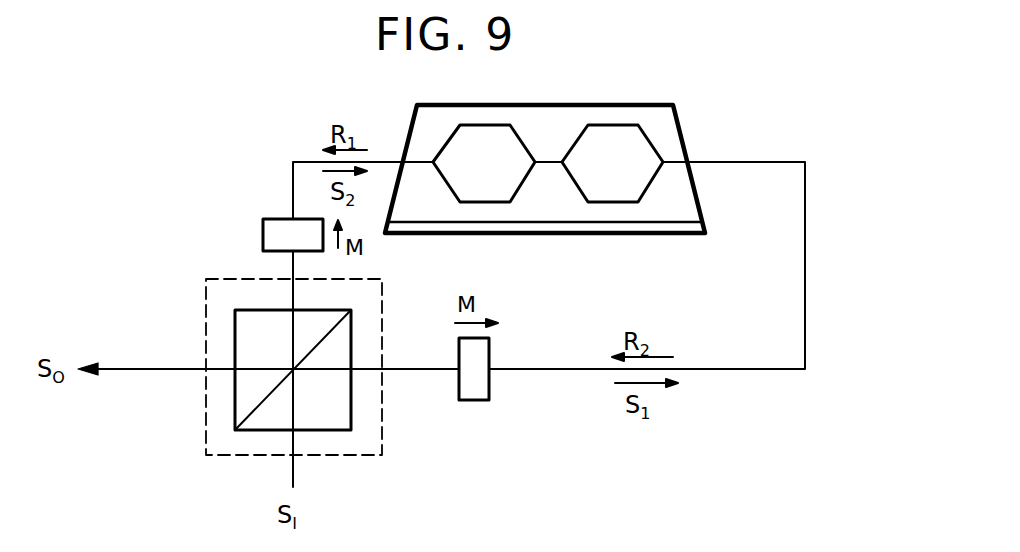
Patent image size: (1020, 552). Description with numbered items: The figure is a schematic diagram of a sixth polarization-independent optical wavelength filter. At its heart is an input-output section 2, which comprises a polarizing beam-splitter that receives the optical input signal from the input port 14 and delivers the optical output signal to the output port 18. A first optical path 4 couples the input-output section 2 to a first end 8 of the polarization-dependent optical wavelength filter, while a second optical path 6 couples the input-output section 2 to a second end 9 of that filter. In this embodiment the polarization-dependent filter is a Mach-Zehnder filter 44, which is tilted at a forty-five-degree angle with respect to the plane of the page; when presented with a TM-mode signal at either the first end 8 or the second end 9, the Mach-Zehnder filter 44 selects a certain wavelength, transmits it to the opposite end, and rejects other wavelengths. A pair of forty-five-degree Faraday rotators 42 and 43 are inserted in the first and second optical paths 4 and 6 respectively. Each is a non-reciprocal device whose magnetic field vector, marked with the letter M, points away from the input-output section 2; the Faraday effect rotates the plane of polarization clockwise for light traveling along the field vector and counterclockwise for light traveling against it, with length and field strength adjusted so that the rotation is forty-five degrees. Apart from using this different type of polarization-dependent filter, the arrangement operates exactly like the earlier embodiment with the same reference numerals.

The input-output section 2 is at (206, 442).
The first optical path 4 is at (805, 240).
The second optical path 6 is at (293, 190).
The first end 8 is at (684, 130).
The second end 9 is at (405, 131).
The input port 14 is at (300, 475).
The output port 18 is at (173, 366).
The Faraday rotator 42 is at (475, 400).
The Faraday rotator 43 is at (263, 236).
The Mach-Zehnder filter 44 is at (633, 103).